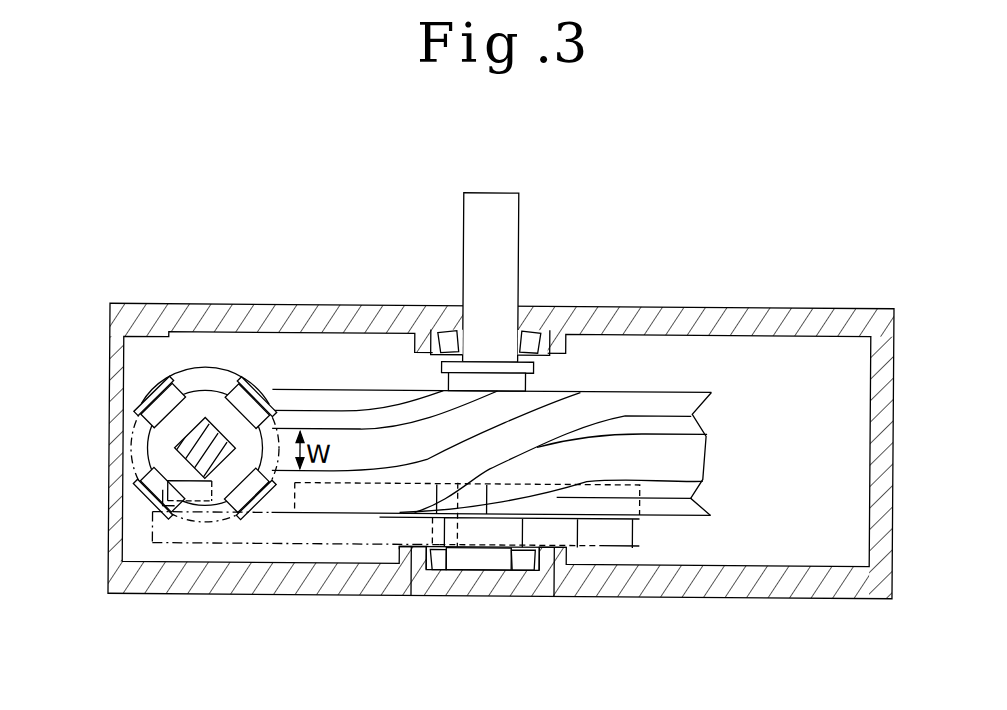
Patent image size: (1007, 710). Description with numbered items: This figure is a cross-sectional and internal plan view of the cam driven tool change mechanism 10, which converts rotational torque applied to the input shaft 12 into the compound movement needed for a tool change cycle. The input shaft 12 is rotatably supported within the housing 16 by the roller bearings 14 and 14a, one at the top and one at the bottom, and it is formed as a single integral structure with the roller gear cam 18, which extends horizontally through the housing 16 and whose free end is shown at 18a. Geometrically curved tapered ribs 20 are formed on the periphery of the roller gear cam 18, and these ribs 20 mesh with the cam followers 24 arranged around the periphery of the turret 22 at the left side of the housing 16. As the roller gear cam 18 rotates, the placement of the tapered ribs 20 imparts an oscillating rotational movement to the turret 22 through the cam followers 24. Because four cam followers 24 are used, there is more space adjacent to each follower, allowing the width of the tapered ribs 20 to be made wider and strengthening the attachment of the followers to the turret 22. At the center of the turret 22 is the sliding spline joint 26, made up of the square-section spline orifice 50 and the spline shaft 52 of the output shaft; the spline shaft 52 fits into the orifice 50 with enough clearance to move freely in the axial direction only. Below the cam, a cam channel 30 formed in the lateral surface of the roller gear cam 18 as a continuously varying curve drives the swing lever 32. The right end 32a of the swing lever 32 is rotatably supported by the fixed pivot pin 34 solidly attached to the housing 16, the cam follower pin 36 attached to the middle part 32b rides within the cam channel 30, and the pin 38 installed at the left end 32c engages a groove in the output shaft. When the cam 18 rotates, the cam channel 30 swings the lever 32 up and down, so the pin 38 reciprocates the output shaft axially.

The cam driven tool change mechanism 10 is at (501, 426).
The input shaft 12 is at (507, 206).
The roller bearing 14 is at (541, 308).
The roller bearing 14a is at (541, 575).
The housing 16 is at (308, 582).
The roller gear cam 18 is at (613, 400).
The rack tooth surface 18a is at (700, 415).
The tapered ribs 20 is at (324, 437).
The turret 22 is at (150, 458).
The cam followers 24 is at (256, 402).
The sliding spline joint 26 is at (199, 421).
The cam channel 30 is at (347, 484).
The swing lever 32 is at (637, 552).
The right end 32a is at (618, 548).
The middle part 32b is at (428, 542).
The left end 32c is at (174, 535).
The fixed pivot pin 34 is at (591, 550).
The cam follower pin 36 is at (492, 572).
The pin 38 is at (203, 522).
The spline orifice 50 is at (176, 451).
The spline shaft 52 is at (219, 425).